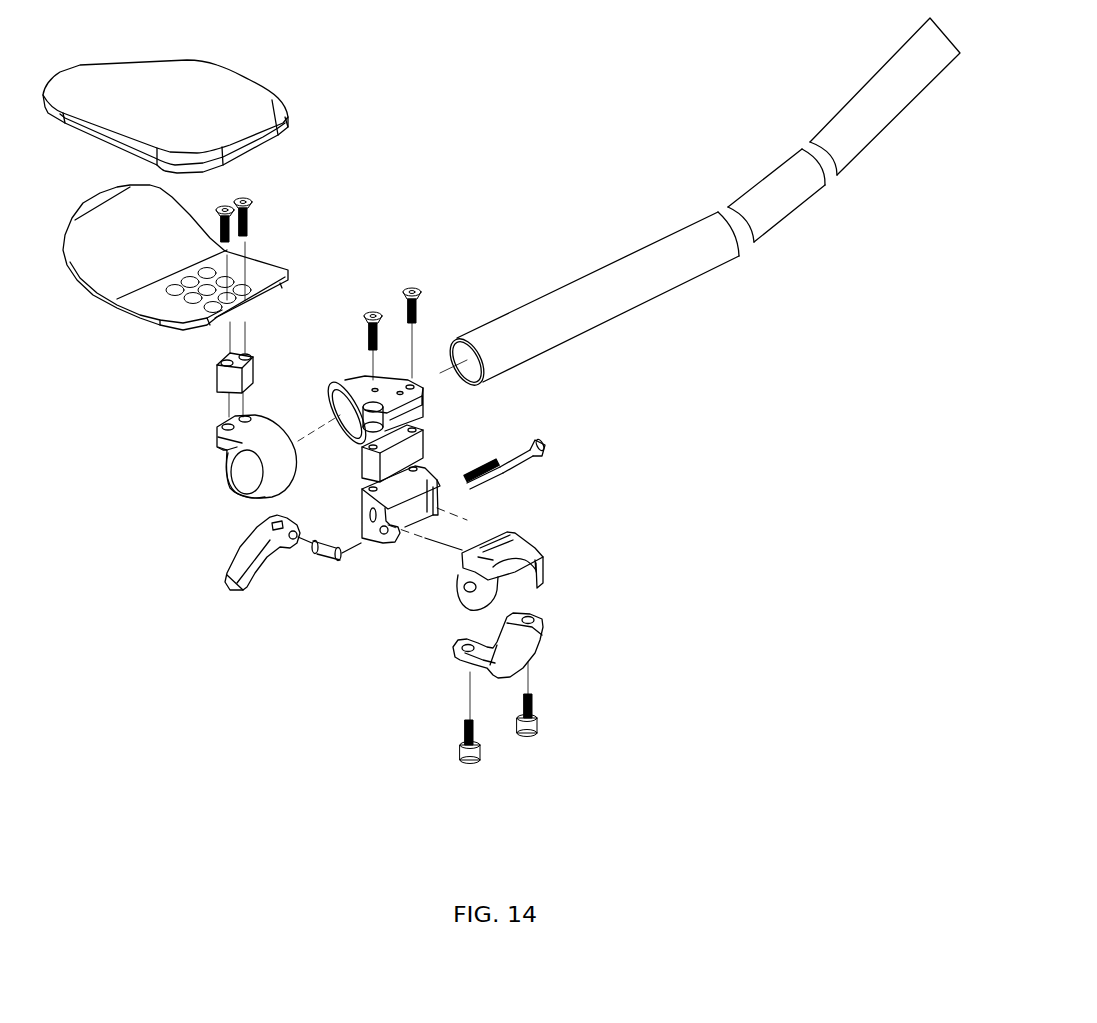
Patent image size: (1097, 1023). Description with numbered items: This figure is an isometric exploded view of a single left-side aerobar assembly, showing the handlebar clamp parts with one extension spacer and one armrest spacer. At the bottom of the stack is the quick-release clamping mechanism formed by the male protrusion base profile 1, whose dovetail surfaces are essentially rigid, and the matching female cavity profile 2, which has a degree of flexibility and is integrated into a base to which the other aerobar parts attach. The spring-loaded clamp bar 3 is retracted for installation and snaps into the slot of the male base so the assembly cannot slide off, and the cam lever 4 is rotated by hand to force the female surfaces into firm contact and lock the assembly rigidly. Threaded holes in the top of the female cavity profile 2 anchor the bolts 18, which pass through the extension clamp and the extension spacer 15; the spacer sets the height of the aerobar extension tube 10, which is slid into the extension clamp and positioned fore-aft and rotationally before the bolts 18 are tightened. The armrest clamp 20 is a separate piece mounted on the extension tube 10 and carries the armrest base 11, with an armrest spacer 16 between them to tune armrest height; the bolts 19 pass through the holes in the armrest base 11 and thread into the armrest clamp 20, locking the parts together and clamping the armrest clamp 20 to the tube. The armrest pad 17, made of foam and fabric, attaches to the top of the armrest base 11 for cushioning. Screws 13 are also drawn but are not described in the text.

The male protrusion base profile 1 is at (540, 550).
The female cavity profile 2 is at (387, 543).
The spring-loaded clamp bar 3 is at (540, 443).
The cam lever 4 is at (238, 546).
The aerobar extension tube 10 is at (622, 257).
The armrest base 11 is at (93, 298).
The screws 13 is at (537, 732).
The extension spacer 15 is at (427, 440).
The armrest spacer 16 is at (217, 377).
The armrest pad 17 is at (288, 107).
The bolts 18 is at (405, 285).
The bolts 19 is at (253, 213).
The armrest clamp 20 is at (230, 473).